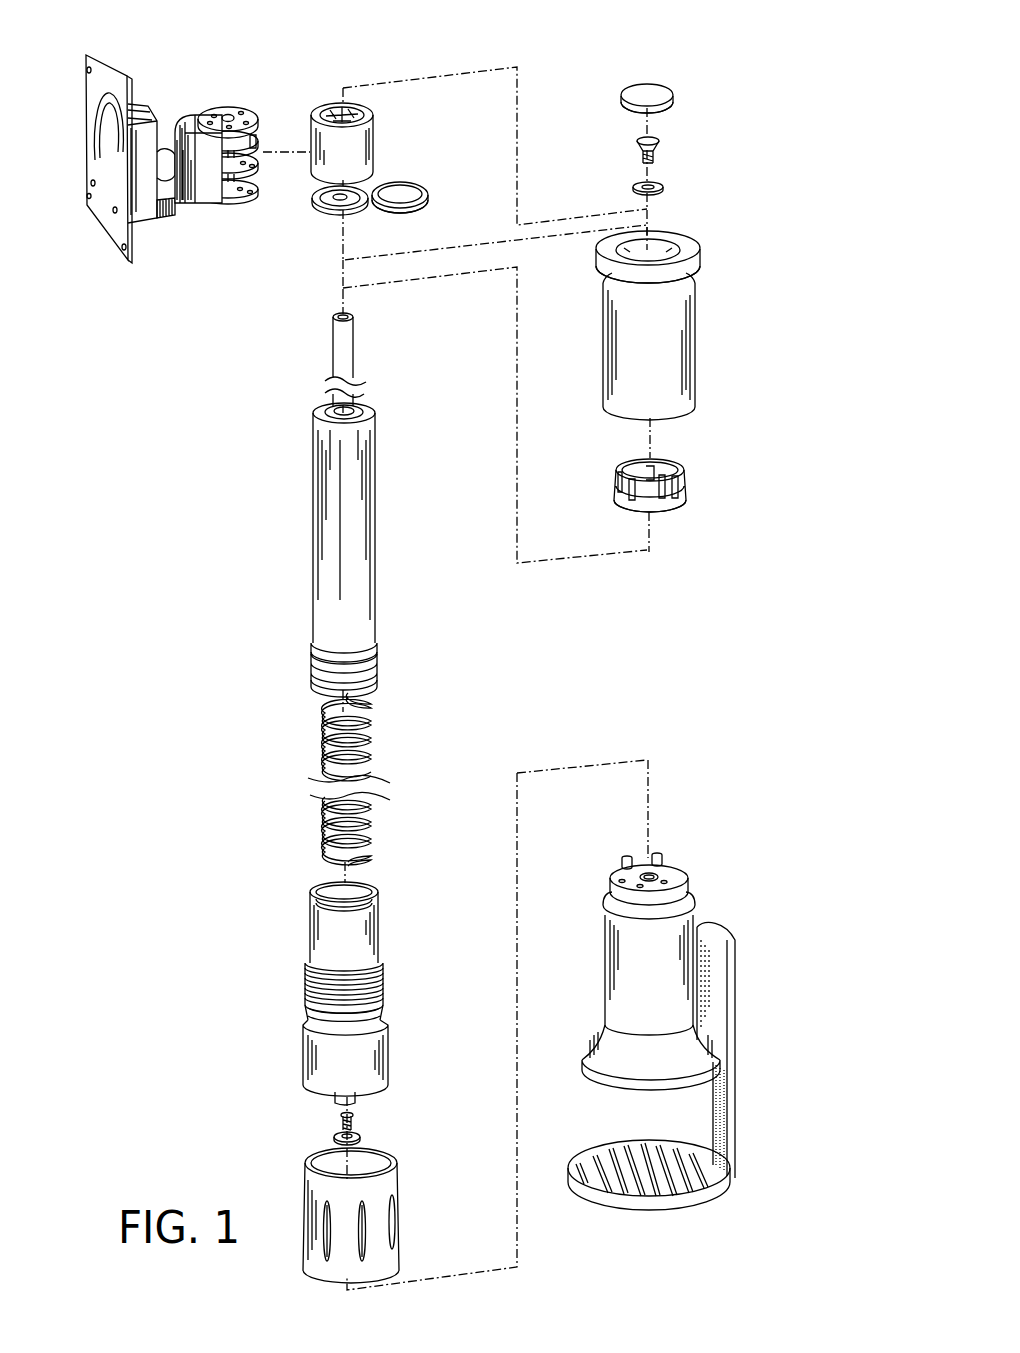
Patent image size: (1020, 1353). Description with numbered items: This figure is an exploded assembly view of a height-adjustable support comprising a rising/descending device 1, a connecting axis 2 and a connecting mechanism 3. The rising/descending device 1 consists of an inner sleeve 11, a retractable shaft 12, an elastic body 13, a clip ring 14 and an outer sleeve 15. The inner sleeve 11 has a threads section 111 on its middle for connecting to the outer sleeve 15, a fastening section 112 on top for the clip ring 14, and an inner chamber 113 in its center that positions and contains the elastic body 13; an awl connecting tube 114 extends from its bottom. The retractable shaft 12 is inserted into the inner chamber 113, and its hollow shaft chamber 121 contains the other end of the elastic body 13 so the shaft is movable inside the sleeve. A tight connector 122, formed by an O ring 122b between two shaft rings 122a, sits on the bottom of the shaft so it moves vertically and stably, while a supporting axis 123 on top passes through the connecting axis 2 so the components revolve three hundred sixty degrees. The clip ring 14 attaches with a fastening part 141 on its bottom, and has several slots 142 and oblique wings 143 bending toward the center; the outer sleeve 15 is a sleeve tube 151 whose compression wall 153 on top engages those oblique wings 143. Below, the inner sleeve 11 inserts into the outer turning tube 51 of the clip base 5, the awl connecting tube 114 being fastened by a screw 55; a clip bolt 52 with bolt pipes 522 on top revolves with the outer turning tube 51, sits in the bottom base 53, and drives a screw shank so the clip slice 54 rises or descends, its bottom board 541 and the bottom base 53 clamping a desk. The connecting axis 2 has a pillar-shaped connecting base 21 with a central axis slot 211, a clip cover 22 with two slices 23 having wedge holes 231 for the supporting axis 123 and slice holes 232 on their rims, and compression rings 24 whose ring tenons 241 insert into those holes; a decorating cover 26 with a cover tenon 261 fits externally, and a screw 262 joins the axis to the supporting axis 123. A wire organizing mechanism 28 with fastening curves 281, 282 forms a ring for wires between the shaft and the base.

The rising/descending device 1 is at (298, 584).
The inner sleeve 11 is at (372, 932).
The threads section 111 is at (383, 983).
The fastening section 112 is at (318, 912).
The inner chamber 113 is at (363, 890).
The awl connecting tube 114 is at (357, 1093).
The retractable shaft 12 is at (367, 555).
The hollow shaft chamber 121 is at (357, 507).
The tight connector 122 is at (380, 657).
The shaft rings 122a is at (318, 663).
The O ring 122b is at (327, 679).
The supporting axis 123 is at (347, 345).
The elastic body 13 is at (370, 723).
The clip ring 14 is at (667, 515).
The fastening part 141 is at (674, 519).
The slots 142 is at (660, 513).
The oblique wings 143 is at (675, 487).
The outer sleeve 15 is at (680, 336).
The sleeve tube 151 is at (667, 248).
The compression wall 153 is at (598, 250).
The connecting axis 2 is at (187, 110).
The connecting base 21 is at (362, 140).
The axis slot 211 is at (347, 107).
The clip cover 22 is at (207, 207).
The slices 23 is at (248, 111).
The wedge holes 231 is at (228, 114).
The slice holes 232 is at (209, 104).
The compression rings 24 is at (255, 140).
The ring tenon 241 is at (238, 152).
The decorating cover 26 is at (634, 96).
The cover tenon 261 is at (660, 108).
The screw 262 is at (657, 150).
The wire organizing mechanism 28 is at (333, 209).
The fastening curve 281 is at (400, 181).
The fastening curve 282 is at (398, 207).
The connecting mechanism 3 is at (142, 101).
The clip base 5 is at (666, 1047).
The outer turning tube 51 is at (314, 1184).
The clip bolt 52 is at (616, 892).
The bolt pipes 522 is at (663, 860).
The bottom base 53 is at (617, 988).
The clip slice 54 is at (727, 1111).
The bottom board 541 is at (670, 1203).
The screw 55 is at (339, 1123).